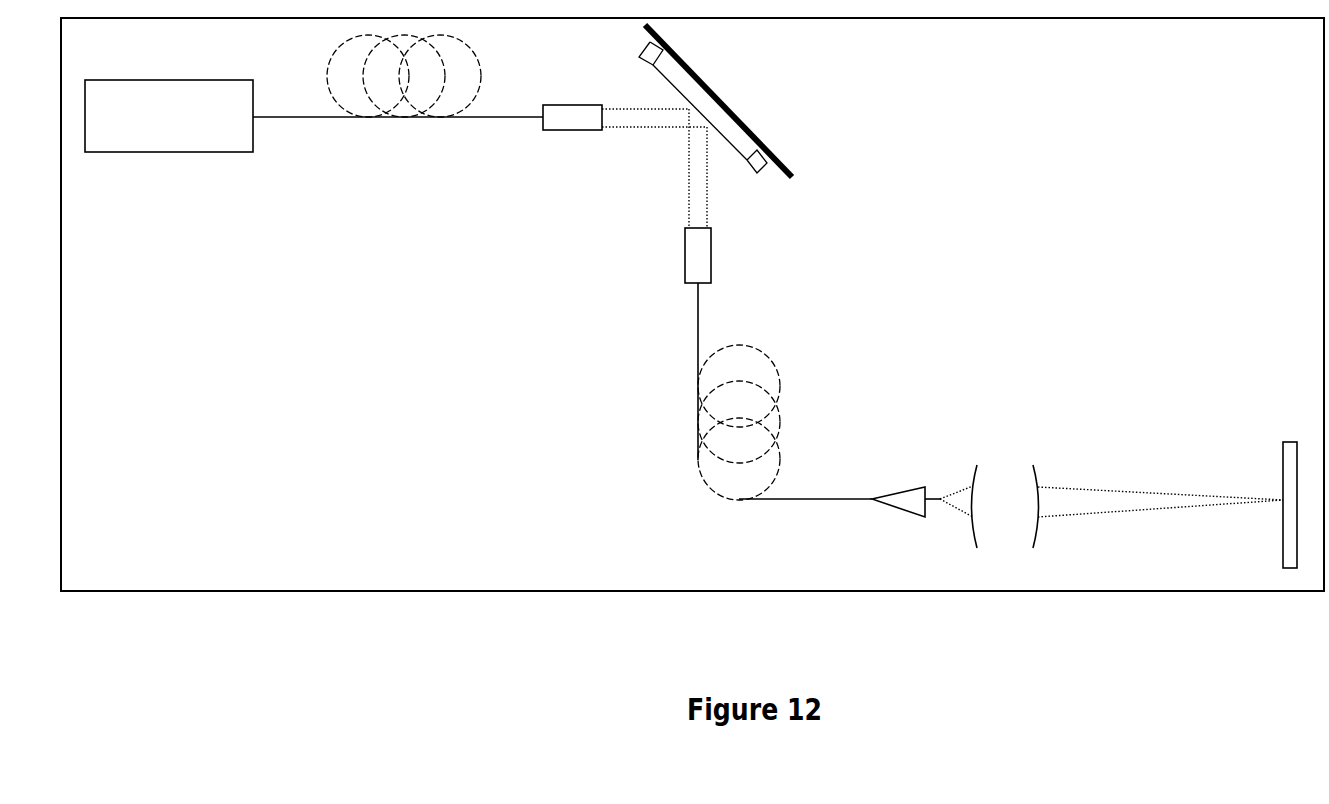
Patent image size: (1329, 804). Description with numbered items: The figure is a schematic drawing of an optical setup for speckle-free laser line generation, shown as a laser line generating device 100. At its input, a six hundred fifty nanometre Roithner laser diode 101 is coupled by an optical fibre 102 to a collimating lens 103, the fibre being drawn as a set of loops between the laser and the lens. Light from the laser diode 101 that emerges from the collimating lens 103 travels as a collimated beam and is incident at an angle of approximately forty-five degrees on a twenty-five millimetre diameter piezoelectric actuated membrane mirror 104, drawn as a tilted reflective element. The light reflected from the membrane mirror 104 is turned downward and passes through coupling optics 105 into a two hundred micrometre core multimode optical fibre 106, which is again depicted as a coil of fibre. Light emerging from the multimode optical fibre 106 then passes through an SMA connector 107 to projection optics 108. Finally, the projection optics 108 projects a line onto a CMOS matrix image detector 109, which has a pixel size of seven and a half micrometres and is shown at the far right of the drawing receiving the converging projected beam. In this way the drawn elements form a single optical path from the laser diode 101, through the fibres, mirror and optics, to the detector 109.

The laser line generating device 100 is at (977, 204).
The laser diode 101 is at (169, 147).
The optical fibre 102 is at (404, 115).
The collimating lens 103 is at (575, 149).
The piezoelectric actuated membrane mirror 104 is at (715, 101).
The coupling optics 105 is at (657, 255).
The multimode optical fibre 106 is at (691, 422).
The SMA connector 107 is at (920, 476).
The projection optics 108 is at (1009, 484).
The CMOS matrix image detector 109 is at (1291, 480).